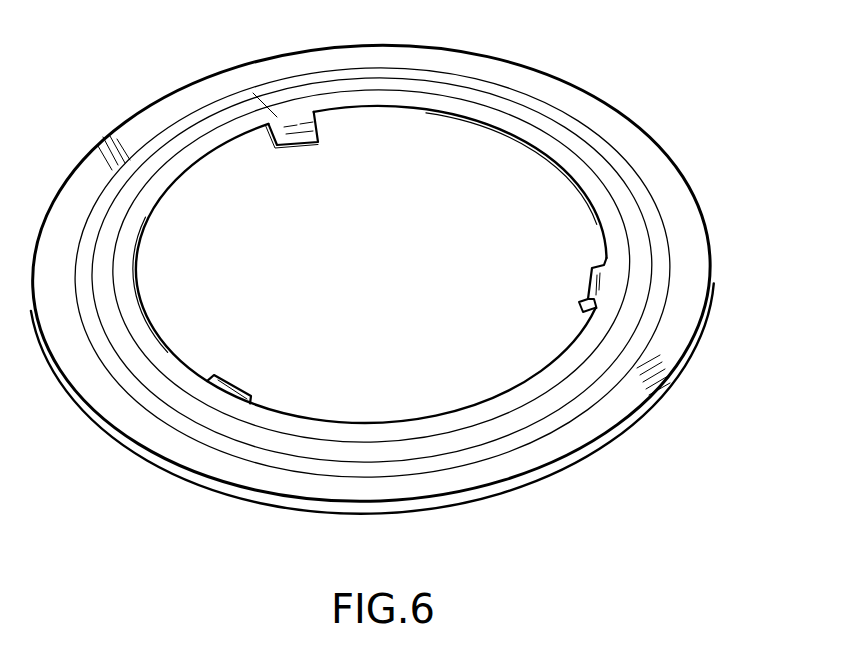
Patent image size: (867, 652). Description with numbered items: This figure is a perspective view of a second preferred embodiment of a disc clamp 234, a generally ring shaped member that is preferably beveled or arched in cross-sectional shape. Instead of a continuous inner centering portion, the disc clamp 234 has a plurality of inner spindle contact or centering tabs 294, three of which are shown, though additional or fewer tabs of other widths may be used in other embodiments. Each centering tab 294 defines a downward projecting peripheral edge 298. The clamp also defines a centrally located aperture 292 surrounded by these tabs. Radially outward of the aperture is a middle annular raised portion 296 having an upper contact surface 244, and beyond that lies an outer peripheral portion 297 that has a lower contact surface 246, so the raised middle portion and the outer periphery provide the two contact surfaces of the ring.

The disc clamp 234 is at (399, 272).
The centrally located aperture 292 is at (453, 152).
The outer peripheral portion 297 is at (642, 138).
The middle annular raised portion 296 is at (624, 254).
The centering tab 294 is at (330, 132).
The downward projecting peripheral edge 298 is at (300, 143).
The upper contact surface 244 is at (610, 307).
The lower contact surface 246 is at (627, 405).